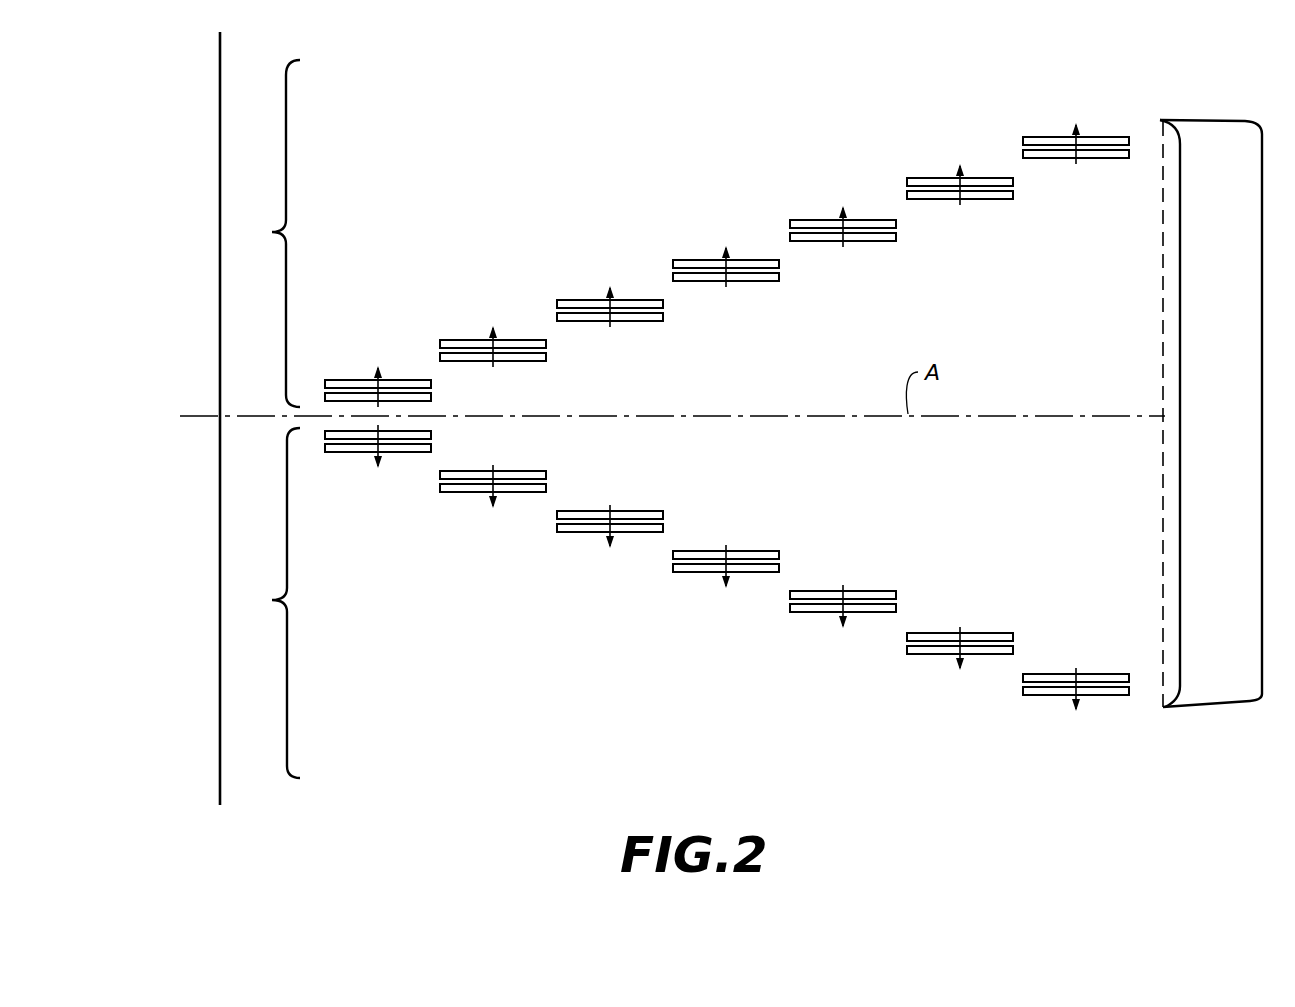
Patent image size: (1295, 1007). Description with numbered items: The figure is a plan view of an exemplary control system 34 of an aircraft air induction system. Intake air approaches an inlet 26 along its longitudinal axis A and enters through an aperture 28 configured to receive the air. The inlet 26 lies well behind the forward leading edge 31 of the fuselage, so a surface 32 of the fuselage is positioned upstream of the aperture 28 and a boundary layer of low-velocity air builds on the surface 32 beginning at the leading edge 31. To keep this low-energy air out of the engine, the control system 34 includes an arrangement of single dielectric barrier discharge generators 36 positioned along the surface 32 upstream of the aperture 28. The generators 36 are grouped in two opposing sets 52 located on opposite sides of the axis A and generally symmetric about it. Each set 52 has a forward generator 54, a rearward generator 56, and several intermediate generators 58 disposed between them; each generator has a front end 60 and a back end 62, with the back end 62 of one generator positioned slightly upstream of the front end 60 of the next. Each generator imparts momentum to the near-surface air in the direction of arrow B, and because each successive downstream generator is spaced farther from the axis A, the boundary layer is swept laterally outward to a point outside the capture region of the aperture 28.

The inlet 26 is at (1222, 120).
The aperture 28 is at (1163, 297).
The leading edge 31 is at (220, 134).
The surface 32 is at (376, 219).
The control system 34 is at (500, 175).
The single dielectric barrier discharge generators 36 is at (349, 379).
The sets 52 is at (270, 419).
The forward generator 54 is at (420, 379).
The rearward generator 56 is at (1120, 136).
The intermediate generators 58 is at (535, 339).
The front end 60 is at (557, 317).
The back end 62 is at (663, 317).